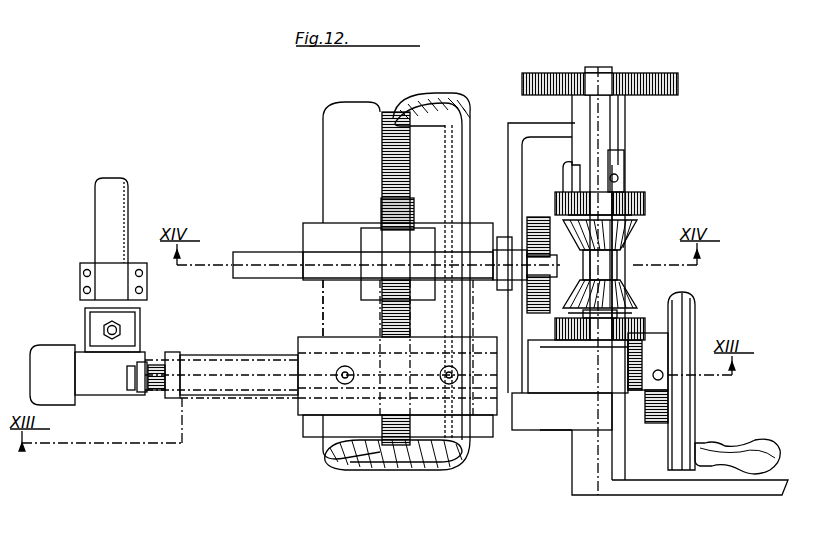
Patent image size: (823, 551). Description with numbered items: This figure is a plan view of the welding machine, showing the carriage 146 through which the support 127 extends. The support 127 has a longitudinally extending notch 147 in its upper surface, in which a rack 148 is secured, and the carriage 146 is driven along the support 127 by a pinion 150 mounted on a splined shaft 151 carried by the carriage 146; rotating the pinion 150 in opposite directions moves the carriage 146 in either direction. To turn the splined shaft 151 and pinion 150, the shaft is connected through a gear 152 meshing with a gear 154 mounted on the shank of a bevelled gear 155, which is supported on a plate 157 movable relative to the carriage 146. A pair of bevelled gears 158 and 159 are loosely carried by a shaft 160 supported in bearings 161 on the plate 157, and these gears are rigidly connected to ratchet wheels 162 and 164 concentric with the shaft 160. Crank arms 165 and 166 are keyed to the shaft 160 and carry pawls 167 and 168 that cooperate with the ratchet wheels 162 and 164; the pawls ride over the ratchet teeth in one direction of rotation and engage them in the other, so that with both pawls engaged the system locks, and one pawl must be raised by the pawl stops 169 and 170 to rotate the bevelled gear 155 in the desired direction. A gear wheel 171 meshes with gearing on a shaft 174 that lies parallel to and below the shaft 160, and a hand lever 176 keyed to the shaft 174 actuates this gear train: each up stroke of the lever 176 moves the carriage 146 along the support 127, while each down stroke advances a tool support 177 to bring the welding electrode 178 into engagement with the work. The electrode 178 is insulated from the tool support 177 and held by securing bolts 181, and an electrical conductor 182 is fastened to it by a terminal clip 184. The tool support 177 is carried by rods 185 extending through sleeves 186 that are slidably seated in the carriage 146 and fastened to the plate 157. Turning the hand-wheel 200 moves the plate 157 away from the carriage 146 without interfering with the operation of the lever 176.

The support 127 is at (458, 96).
The carriage 146 is at (489, 213).
The notch 147 is at (380, 139).
The rack 148 is at (382, 265).
The pinion 150 is at (383, 208).
The splined shaft 151 is at (286, 247).
The gear 152 is at (539, 215).
The gear 154 is at (565, 299).
The bevelled gear 155 is at (600, 257).
The plate 157 is at (530, 120).
The bevelled gear 158 is at (622, 227).
The bevelled gear 159 is at (617, 293).
The shaft 160 is at (617, 272).
The bearings 161 is at (618, 130).
The ratchet wheel 162 is at (632, 192).
The ratchet wheel 164 is at (640, 320).
The crank arm 165 is at (566, 170).
The crank arm 166 is at (596, 348).
The pawl 167 is at (618, 180).
The pawl 168 is at (614, 330).
The pawl stop 169 is at (622, 162).
The pawl stop 170 is at (632, 360).
The gear wheel 171 is at (615, 80).
The shaft 174 is at (600, 497).
The hand lever 176 is at (740, 490).
The tool support 177 is at (174, 392).
The welding electrode 178 is at (82, 360).
The securing bolts 181 is at (140, 392).
The electrical conductor 182 is at (103, 225).
The terminal clip 184 is at (146, 273).
The rods 185 is at (279, 404).
The sleeves 186 is at (250, 404).
The hand-wheel 200 is at (686, 418).